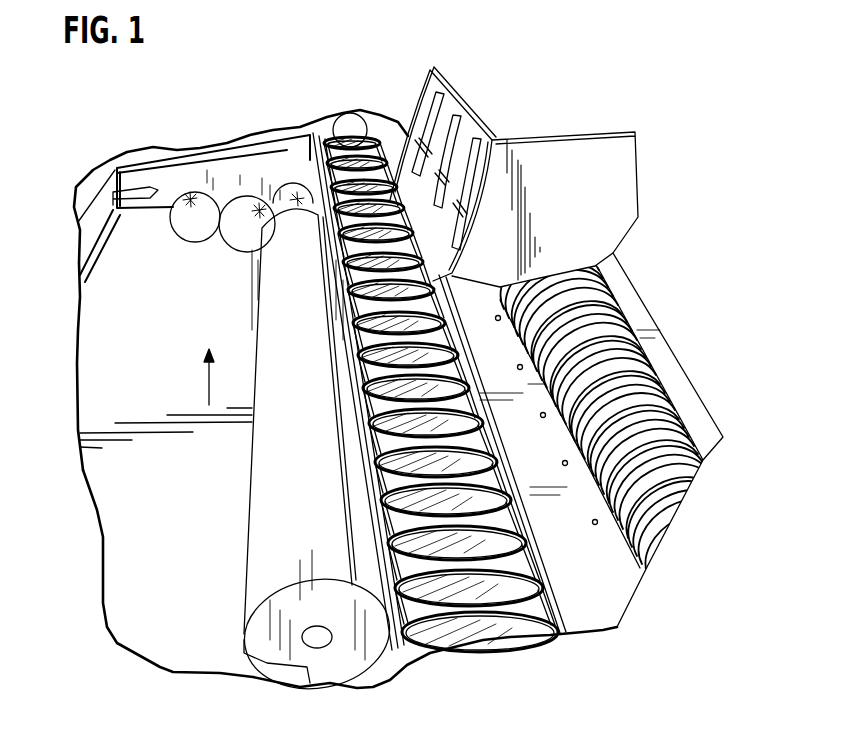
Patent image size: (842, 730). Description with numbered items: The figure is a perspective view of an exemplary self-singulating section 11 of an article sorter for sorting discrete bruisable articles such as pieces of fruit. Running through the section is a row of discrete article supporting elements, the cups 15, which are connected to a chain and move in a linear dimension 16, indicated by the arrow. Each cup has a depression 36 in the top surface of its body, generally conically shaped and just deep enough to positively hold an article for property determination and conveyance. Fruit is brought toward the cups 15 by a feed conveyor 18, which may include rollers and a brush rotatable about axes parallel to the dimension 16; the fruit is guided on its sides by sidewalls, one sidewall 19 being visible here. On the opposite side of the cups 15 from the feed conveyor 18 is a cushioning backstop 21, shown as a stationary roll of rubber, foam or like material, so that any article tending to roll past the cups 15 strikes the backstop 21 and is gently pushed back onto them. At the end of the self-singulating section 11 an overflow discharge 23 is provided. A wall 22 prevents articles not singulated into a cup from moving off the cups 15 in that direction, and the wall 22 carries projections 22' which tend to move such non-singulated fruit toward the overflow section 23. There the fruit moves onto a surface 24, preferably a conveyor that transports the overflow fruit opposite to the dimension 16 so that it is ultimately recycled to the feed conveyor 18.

The self-singulating section 11 is at (165, 349).
The cups 15 is at (503, 588).
The linear dimension 16 is at (199, 378).
The feed conveyor 18 is at (692, 270).
The sidewall 19 is at (553, 160).
The cushioning backstop 21 is at (257, 550).
The wall 22 is at (455, 174).
The projections 22' is at (405, 132).
The overflow discharge 23 is at (186, 143).
The surface 24 is at (118, 540).
The depression 36 is at (470, 500).